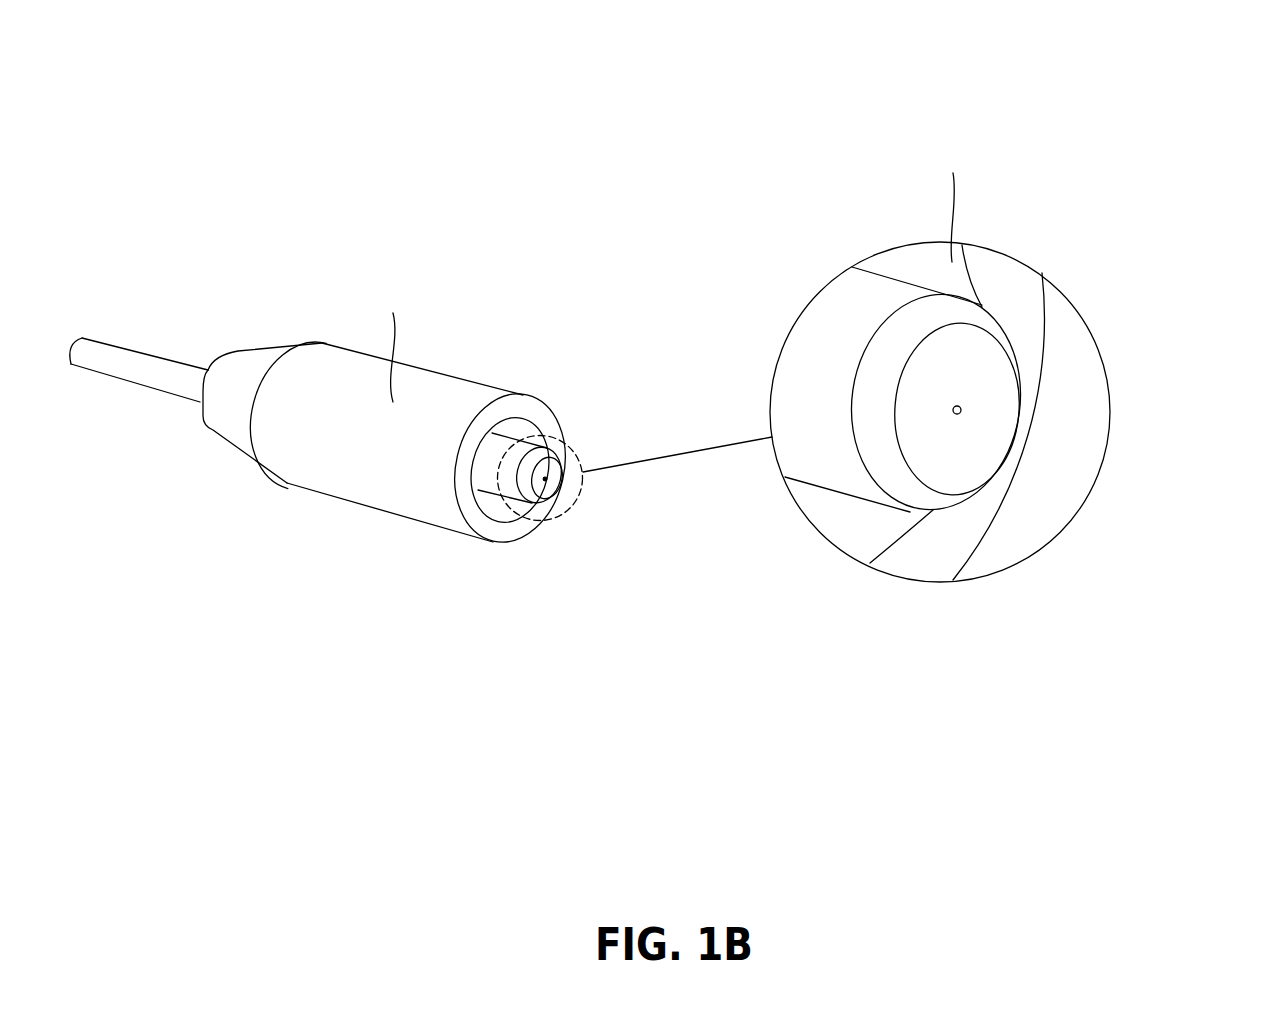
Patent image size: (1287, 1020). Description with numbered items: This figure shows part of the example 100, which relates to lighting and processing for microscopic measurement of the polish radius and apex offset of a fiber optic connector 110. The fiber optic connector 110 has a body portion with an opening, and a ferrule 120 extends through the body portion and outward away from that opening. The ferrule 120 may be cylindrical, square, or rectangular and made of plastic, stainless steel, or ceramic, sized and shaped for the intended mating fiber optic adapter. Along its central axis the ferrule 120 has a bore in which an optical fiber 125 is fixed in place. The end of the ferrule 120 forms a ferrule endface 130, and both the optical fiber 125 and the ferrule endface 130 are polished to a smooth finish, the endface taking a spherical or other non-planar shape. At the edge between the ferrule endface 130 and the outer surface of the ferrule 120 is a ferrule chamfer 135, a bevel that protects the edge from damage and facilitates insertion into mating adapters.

The example 100 is at (168, 73).
The fiber optic connector 110 is at (408, 492).
The ferrule 120 is at (830, 297).
The optical fiber 125 is at (972, 405).
The ferrule endface 130 is at (988, 378).
The ferrule chamfer 135 is at (888, 485).